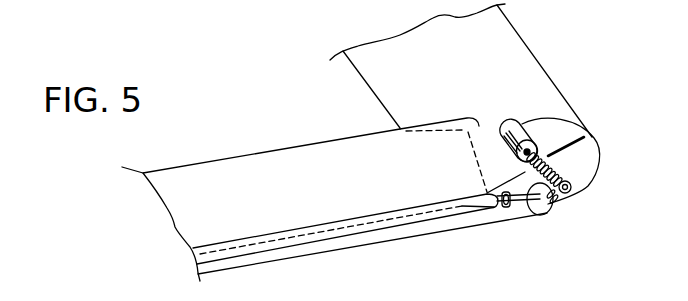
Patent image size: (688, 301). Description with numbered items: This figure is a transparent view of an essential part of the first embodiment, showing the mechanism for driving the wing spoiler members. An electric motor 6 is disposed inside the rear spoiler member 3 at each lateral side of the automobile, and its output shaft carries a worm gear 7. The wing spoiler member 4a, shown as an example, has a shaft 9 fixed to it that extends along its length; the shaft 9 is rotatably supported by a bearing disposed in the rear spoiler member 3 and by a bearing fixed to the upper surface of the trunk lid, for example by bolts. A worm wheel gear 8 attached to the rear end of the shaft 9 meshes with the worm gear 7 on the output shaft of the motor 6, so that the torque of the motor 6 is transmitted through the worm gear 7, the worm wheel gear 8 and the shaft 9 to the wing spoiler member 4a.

The rear spoiler member 3 is at (488, 52).
The wing spoiler member 4a is at (197, 221).
The electric motor 6 is at (523, 124).
The worm gear 7 is at (553, 168).
The worm wheel gear 8 is at (537, 214).
The shaft 9 is at (470, 211).